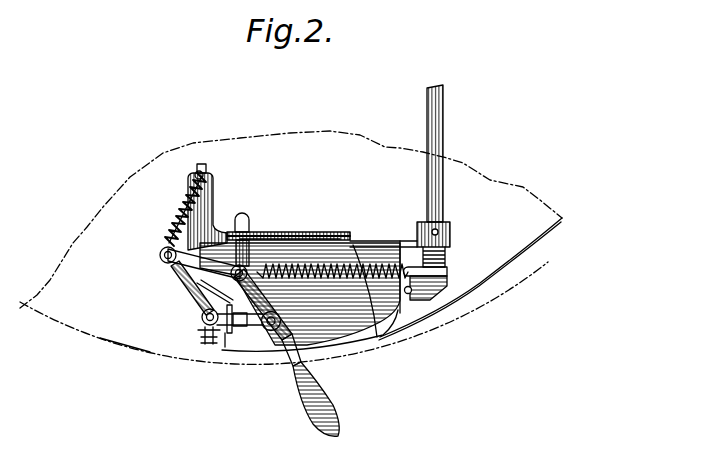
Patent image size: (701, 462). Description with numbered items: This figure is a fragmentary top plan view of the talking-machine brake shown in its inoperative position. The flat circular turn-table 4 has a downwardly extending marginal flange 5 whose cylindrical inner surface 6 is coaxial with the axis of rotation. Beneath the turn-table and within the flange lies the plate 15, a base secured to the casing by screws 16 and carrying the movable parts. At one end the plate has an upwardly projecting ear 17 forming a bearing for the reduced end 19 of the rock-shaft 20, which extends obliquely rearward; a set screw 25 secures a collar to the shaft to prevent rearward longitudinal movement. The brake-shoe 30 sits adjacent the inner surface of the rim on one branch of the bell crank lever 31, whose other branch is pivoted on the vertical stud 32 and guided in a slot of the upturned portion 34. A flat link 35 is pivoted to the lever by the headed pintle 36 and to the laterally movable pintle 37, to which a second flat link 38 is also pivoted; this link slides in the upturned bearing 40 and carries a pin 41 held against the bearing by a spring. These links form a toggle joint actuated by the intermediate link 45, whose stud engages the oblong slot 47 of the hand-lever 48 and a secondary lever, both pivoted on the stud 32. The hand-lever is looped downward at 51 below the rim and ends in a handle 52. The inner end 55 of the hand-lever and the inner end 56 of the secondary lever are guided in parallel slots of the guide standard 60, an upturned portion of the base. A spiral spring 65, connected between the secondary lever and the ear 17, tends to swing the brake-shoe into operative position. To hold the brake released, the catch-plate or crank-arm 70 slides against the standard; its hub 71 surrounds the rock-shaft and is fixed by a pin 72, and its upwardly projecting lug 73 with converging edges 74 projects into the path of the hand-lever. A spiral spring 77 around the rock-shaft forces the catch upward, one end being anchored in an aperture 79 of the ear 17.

The turn-table 4 is at (82, 257).
The marginal annular flange 5 is at (97, 342).
The cylindrical inner surface 6 is at (130, 345).
The plate 15 is at (300, 293).
The screws 16 is at (233, 305).
The upwardly projecting ear 17 is at (449, 272).
The reduced end of rock-shaft 19 is at (447, 288).
The rock-shaft 20 is at (430, 207).
The set screw 25 is at (183, 204).
The brake-shoe 30 is at (197, 337).
The bell crank lever 31 is at (225, 347).
The vertical stud 32 is at (268, 332).
The upturned portion 34 is at (230, 333).
The flat link 35 is at (183, 278).
The vertical headed pintle 36 is at (202, 317).
The vertical pintle 37 is at (160, 254).
The flat link 38 is at (190, 192).
The upturned bearing 40 is at (195, 174).
The pin 41 is at (203, 161).
The intermediate link 45 is at (177, 267).
The oblong slot 47 is at (208, 240).
The hand-lever 48 is at (310, 344).
The downwardly looped portion 51 is at (290, 372).
The handle 52 is at (334, 396).
The inner end of hand-lever 55 is at (243, 216).
The inner end of secondary lever 56 is at (257, 272).
The guide standard 60 is at (290, 243).
The spiral spring 65 is at (378, 325).
The crank-arm 70 is at (370, 241).
The hub or collar 71 is at (452, 237).
The pin 72 is at (450, 224).
The upwardly projecting lug 73 is at (258, 240).
The converging edges 74 is at (253, 240).
The spiral spring 77 is at (446, 262).
The aperture 79 is at (443, 293).